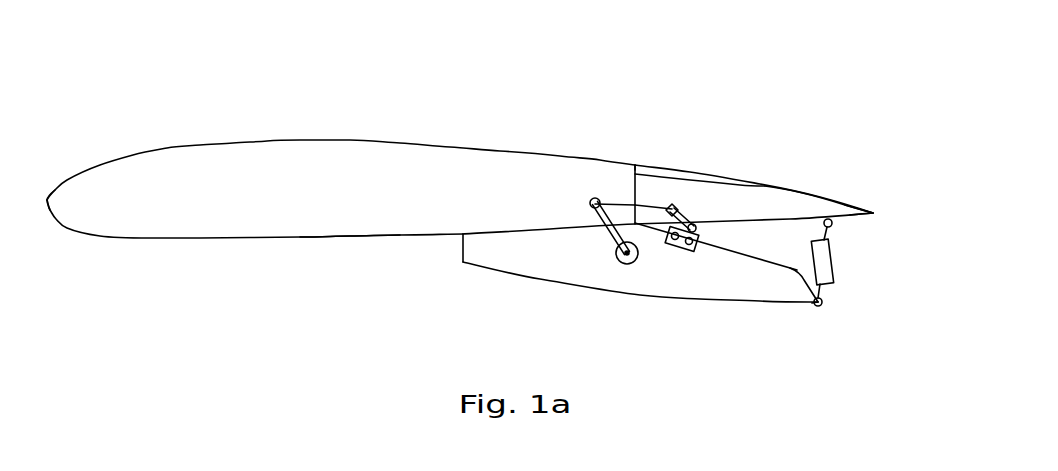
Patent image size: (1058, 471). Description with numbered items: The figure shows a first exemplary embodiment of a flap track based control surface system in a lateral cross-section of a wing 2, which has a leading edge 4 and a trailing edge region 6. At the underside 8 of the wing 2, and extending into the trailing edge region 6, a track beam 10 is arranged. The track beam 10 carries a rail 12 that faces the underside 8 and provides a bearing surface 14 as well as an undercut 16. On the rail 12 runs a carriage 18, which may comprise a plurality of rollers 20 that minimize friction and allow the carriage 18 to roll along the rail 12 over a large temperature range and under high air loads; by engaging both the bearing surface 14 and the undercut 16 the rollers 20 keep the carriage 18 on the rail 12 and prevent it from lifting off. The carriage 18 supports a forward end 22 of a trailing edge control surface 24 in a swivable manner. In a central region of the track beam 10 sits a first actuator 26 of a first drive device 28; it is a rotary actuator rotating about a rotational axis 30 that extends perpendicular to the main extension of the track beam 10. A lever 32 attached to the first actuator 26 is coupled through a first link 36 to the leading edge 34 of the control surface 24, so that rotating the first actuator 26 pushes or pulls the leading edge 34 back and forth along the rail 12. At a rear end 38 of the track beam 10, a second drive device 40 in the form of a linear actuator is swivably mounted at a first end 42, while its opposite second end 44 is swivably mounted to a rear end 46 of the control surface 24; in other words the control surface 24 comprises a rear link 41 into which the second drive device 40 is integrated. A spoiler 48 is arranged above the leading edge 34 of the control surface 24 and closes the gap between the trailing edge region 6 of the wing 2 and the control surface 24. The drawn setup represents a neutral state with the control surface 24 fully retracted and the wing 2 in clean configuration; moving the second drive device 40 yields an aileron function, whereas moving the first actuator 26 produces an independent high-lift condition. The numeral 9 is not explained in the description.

The wing 2 is at (318, 155).
The leading edge 4 is at (55, 183).
The trailing edge region 6 is at (640, 108).
The underside 8 is at (345, 249).
The link lever 9 is at (586, 246).
The track beam 10 is at (492, 255).
The rail 12 is at (760, 257).
The bearing surface 14 is at (732, 234).
The undercut 16 is at (748, 276).
The carriage 18 is at (697, 224).
The rollers 20 is at (670, 241).
The forward end 22 is at (684, 191).
The trailing edge control surface 24 is at (778, 188).
The first actuator 26 is at (627, 281).
The first drive device 28 is at (618, 177).
The rotational axis 30 is at (618, 264).
The lever 32 is at (590, 221).
The leading edge 34 is at (672, 204).
The first link 36 is at (615, 203).
The rear end 38 is at (808, 321).
The second drive device 40 is at (831, 270).
The rear link 41 is at (879, 264).
The first end 42 is at (824, 308).
The second end 44 is at (831, 226).
The rear end 46 is at (870, 196).
The spoiler 48 is at (690, 216).